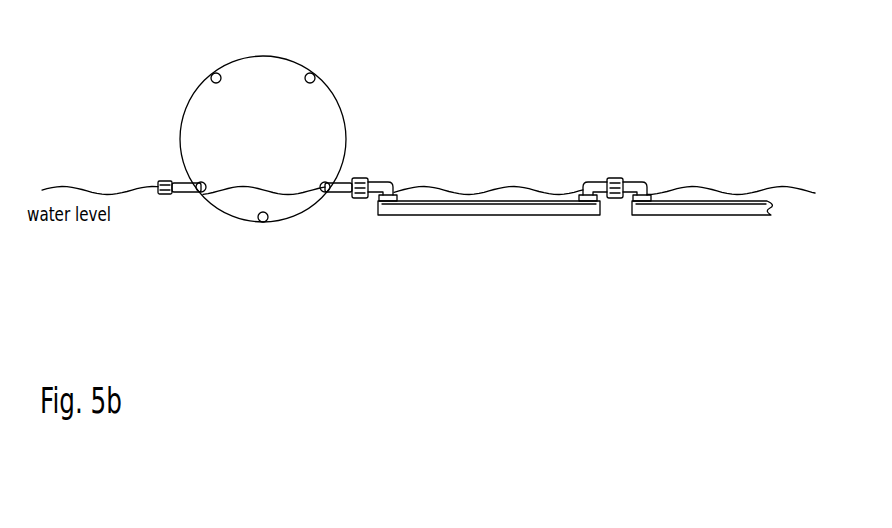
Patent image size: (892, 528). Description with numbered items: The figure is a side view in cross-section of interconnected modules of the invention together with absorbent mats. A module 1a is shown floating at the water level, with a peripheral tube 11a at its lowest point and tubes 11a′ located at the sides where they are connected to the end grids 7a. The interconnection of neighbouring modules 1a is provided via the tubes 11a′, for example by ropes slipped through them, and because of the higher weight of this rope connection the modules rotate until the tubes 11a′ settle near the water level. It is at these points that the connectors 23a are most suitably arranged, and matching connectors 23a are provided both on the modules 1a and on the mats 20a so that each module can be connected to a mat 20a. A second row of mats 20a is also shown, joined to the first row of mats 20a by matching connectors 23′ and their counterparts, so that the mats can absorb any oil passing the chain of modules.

The module 1a is at (195, 82).
The end grid 7a is at (335, 93).
The tube 11a′ is at (202, 192).
The peripheral tube 11a is at (263, 222).
The connector 23a is at (354, 178).
The matching connector 23′ is at (368, 180).
The mat 20a is at (510, 208).